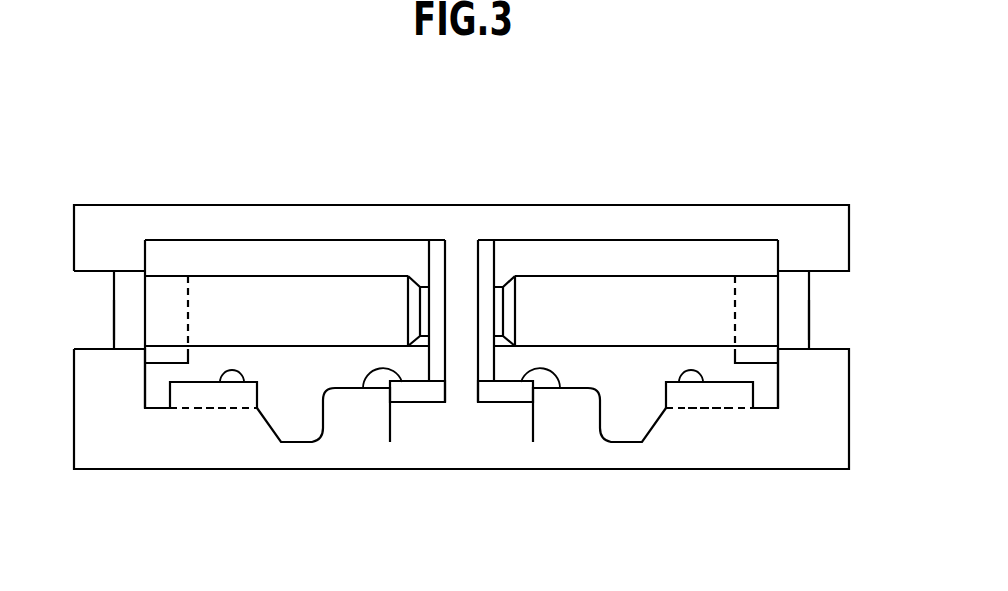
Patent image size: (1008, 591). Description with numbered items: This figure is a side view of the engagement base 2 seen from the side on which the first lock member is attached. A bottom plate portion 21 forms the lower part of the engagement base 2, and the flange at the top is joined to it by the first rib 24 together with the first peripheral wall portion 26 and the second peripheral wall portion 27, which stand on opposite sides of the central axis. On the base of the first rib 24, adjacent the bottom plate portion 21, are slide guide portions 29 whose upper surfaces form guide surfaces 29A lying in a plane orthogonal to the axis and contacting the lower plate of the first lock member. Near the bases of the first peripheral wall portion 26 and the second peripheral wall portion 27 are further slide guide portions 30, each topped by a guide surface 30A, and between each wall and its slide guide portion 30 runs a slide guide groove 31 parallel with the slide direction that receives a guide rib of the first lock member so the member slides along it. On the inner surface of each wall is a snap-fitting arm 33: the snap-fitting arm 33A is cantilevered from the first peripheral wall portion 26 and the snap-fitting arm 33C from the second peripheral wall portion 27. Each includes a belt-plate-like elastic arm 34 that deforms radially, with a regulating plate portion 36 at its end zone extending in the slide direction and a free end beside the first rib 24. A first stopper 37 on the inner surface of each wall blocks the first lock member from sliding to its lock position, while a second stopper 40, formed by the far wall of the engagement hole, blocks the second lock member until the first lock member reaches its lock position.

The engagement base 2 is at (142, 190).
The bottom plate portion 21 is at (310, 457).
The first rib 24 is at (452, 308).
The first peripheral wall portion 26 is at (809, 300).
The second peripheral wall portion 27 is at (114, 298).
The slide guide portion 29 is at (417, 393).
The guide surface 29A is at (363, 389).
The slide guide portion 30 is at (207, 392).
The guide surface 30A is at (244, 382).
The slide guide groove 31 is at (145, 395).
The snap-fitting arm 33 is at (461, 311).
The snap-fitting arm 33A is at (568, 273).
The snap-fitting arm 33C is at (297, 273).
The elastic arm 34 is at (253, 300).
The regulating plate portion 36 is at (415, 304).
The first stopper 37 is at (160, 360).
The second stopper 40 is at (114, 320).